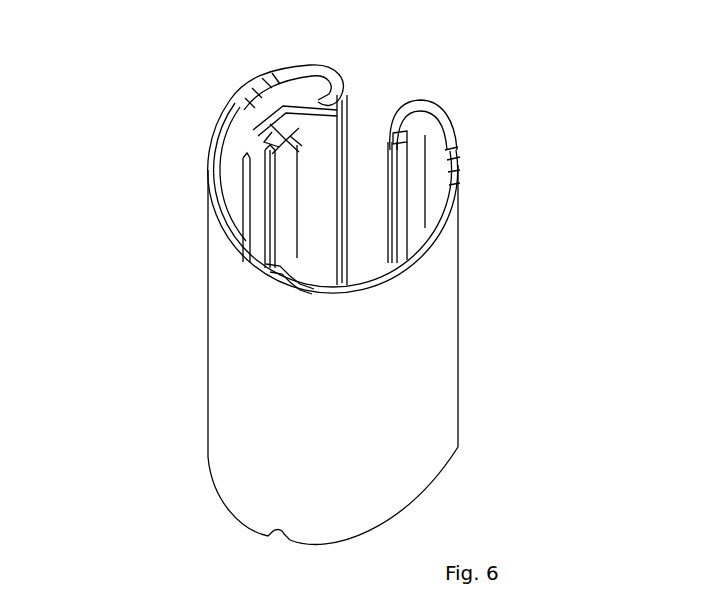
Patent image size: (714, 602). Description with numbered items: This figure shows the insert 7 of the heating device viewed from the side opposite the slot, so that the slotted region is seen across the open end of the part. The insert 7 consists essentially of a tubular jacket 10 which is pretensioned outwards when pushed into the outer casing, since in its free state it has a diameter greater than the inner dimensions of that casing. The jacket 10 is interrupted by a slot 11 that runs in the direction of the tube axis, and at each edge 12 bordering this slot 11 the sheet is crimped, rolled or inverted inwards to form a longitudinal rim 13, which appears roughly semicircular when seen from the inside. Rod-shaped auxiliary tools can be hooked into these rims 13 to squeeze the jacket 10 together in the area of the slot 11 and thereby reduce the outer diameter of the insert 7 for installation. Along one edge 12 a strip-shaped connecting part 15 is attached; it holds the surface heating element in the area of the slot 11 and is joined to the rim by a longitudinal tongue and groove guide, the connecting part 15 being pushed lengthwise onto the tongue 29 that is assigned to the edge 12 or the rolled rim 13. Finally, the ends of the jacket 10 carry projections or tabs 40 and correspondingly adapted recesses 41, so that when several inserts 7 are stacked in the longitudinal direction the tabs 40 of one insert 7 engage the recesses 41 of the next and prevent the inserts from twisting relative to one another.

The insert 7 is at (457, 351).
The jacket 10 is at (230, 422).
The slot 11 is at (373, 110).
The edge 12 is at (323, 68).
The rolled rim 13 is at (338, 87).
The strip-shaped connecting part 15 is at (270, 136).
The tongue 29 is at (285, 145).
The tab 40 is at (260, 83).
The recess 41 is at (287, 540).